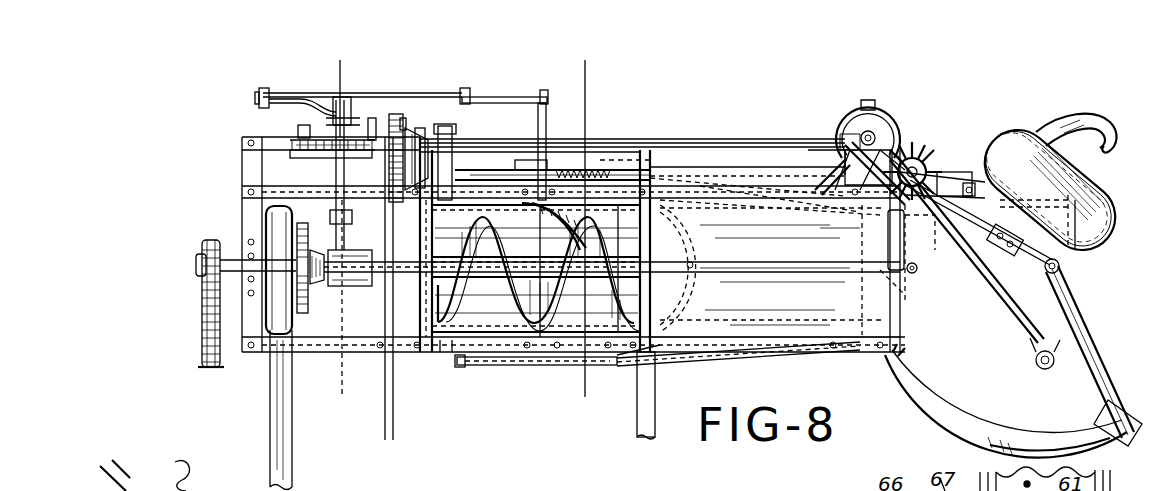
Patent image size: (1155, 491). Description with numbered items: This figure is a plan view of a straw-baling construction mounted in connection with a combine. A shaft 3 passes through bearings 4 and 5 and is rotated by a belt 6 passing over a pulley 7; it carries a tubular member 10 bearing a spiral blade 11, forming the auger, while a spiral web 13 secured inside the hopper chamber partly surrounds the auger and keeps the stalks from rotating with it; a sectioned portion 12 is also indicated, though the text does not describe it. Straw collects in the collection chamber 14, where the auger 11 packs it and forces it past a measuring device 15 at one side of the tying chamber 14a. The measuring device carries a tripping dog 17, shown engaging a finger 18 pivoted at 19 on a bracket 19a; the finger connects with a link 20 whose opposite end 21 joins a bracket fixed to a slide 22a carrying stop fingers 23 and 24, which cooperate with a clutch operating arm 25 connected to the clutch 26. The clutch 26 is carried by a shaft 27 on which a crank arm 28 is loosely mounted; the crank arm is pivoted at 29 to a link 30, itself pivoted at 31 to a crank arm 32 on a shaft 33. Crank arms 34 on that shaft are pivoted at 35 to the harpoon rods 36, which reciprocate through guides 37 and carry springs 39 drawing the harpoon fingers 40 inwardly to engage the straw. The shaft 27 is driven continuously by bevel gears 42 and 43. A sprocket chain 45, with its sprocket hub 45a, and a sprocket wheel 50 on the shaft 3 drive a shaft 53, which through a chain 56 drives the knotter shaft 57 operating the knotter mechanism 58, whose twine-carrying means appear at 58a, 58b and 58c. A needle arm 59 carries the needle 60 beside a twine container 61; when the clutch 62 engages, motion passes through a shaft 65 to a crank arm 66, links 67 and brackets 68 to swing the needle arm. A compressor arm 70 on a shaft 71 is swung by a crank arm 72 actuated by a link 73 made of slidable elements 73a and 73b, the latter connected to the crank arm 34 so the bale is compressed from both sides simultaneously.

The shaft 3 is at (365, 285).
The bearing 4 is at (250, 258).
The bearing 5 is at (455, 278).
The belt 6 is at (288, 445).
The pulley 7 is at (290, 208).
The tubular member 10 is at (495, 275).
The spiral blade 11 is at (445, 352).
The chute section 12 is at (585, 60).
The spiral web 13 is at (340, 60).
The collection chamber 14 is at (774, 323).
The tying chamber 14a is at (910, 270).
The measuring device 15 is at (945, 170).
The tripping dog 17 is at (910, 256).
The finger 18 is at (412, 130).
The pivot 19 is at (915, 268).
The bracket 19a is at (900, 280).
The link 20 is at (828, 225).
The link end 21 is at (300, 140).
The slide 22a is at (310, 158).
The stop finger 23 is at (300, 125).
The stop finger 24 is at (394, 116).
The clutch operating arm 25 is at (372, 120).
The clutch 26 is at (348, 100).
The shaft 27 is at (340, 215).
The crank arm 28 is at (298, 104).
The pivot 29 is at (259, 95).
The link 30 is at (400, 93).
The pivot 31 is at (466, 88).
The crank arm 32 is at (498, 97).
The shaft 33 is at (545, 150).
The crank arm 34 is at (498, 168).
The pivot 35 is at (478, 216).
The harpoon rod 36 is at (520, 168).
The guide 37 is at (745, 190).
The spring 39 is at (660, 356).
The harpoon finger 40 is at (690, 180).
The bevel gear 42 is at (340, 290).
The bevel gear 43 is at (318, 284).
The sprocket chain 45 is at (205, 298).
The hub 45a is at (200, 258).
The sprocket wheel 50 is at (303, 312).
The shaft 53 is at (404, 118).
The chain 56 is at (455, 150).
The knotter shaft 57 is at (650, 138).
The knotter mechanism 58 is at (872, 122).
The twine-carrying operating means 58a is at (868, 100).
The twine-carrying operating means 58b is at (822, 195).
The twine-carrying operating means 58c is at (870, 195).
The needle arm 59 is at (1098, 360).
The needle 60 is at (1022, 382).
The twine container 61 is at (1105, 212).
The clutch 62 is at (437, 131).
The shaft 65 is at (890, 150).
The crank arm 66 is at (912, 155).
The link 67 is at (1022, 286).
The bracket 68 is at (1050, 368).
The compressor arm 70 is at (1088, 124).
The shaft 71 is at (968, 182).
The crank arm 72 is at (950, 172).
The link 73 is at (662, 170).
The slidable element 73a is at (823, 165).
The slidable element 73b is at (605, 170).